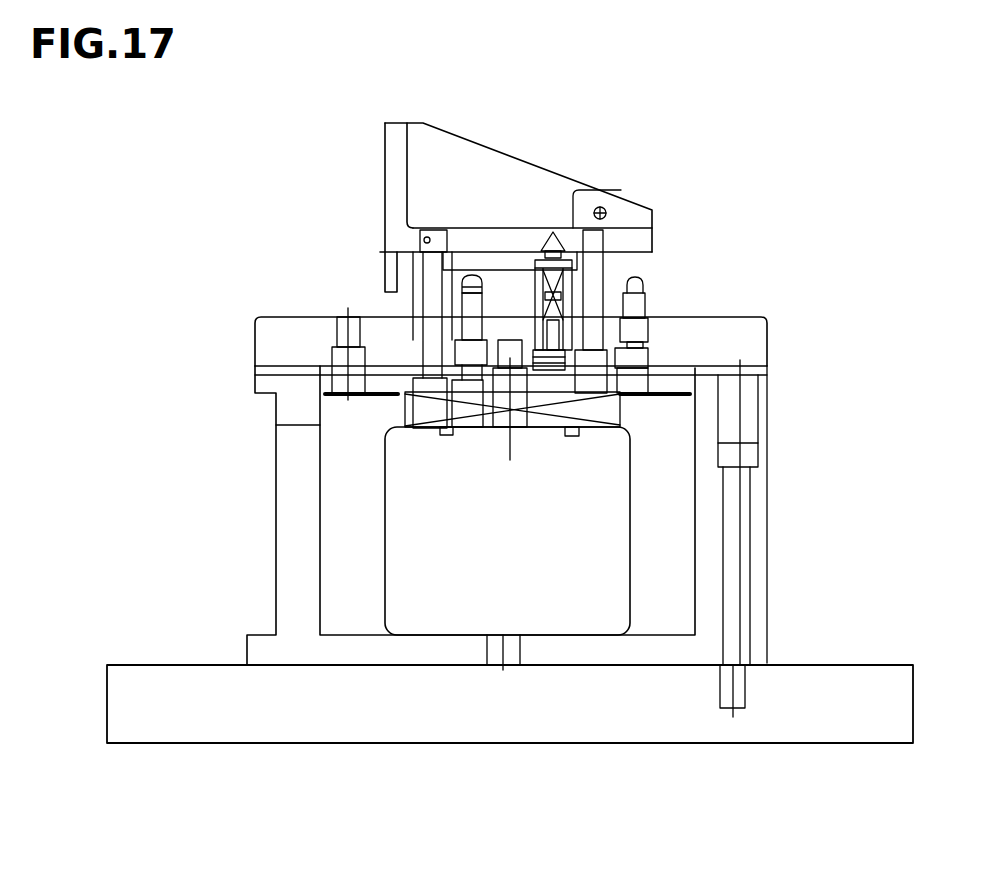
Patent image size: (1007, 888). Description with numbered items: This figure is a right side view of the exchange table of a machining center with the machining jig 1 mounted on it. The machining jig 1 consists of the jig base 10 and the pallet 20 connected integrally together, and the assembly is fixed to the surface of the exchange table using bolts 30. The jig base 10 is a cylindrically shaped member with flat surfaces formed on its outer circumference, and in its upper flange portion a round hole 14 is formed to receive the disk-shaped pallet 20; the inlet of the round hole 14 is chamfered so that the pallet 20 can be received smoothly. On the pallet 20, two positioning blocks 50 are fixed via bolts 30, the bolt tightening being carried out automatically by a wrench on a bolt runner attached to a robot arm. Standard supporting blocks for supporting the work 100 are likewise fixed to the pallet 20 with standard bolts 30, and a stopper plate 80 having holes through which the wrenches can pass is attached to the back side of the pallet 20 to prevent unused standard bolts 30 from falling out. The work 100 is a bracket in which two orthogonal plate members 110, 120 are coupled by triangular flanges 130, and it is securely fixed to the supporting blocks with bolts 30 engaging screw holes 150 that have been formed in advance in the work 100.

The machining jig 1 is at (237, 511).
The jig base 10 is at (302, 580).
The round hole 14 is at (580, 556).
The pallet 20 is at (307, 330).
The bolt 30 is at (598, 303).
The positioning block 50 is at (640, 262).
The stopper plate 80 is at (660, 398).
The work 100 is at (677, 210).
The plate member 110 is at (473, 237).
The plate member 120 is at (385, 181).
The triangular flange 130 is at (535, 172).
The screw hole 150 is at (420, 234).